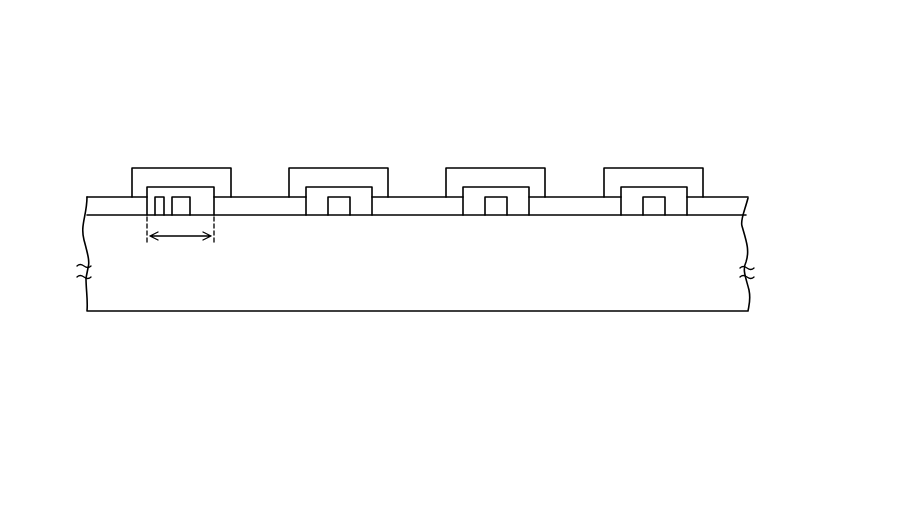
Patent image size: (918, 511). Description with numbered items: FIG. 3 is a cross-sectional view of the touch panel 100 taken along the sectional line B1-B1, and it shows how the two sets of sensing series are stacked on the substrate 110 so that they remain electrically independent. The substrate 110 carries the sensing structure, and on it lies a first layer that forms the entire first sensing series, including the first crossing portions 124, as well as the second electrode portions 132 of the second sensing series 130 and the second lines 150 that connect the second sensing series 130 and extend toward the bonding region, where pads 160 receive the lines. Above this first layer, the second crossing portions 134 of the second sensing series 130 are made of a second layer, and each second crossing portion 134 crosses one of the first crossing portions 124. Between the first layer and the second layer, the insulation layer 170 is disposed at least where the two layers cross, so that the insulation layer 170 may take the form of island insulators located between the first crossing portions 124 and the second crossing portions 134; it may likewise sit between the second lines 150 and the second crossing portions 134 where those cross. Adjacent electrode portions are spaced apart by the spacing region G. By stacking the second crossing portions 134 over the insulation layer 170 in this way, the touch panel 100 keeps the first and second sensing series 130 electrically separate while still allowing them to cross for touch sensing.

The touch panel 100 is at (795, 381).
The substrate 110 is at (730, 248).
The first crossing portion 124 is at (182, 203).
The second sensing series 130 is at (295, 78).
The second electrode portion 132 is at (258, 207).
The second crossing portion 134 is at (186, 176).
The second line 150 is at (160, 204).
The pad 160 is at (169, 191).
The insulation layer 170 is at (360, 193).